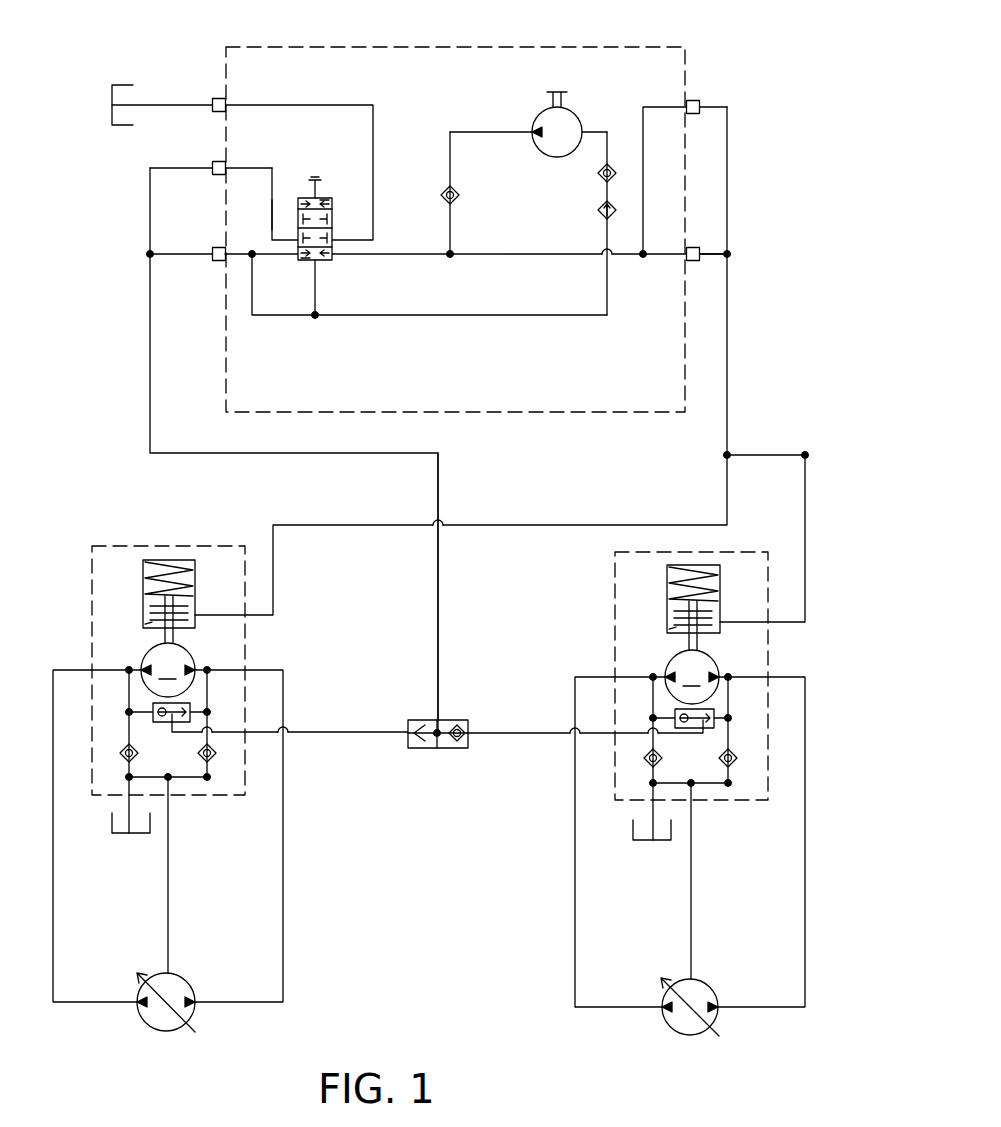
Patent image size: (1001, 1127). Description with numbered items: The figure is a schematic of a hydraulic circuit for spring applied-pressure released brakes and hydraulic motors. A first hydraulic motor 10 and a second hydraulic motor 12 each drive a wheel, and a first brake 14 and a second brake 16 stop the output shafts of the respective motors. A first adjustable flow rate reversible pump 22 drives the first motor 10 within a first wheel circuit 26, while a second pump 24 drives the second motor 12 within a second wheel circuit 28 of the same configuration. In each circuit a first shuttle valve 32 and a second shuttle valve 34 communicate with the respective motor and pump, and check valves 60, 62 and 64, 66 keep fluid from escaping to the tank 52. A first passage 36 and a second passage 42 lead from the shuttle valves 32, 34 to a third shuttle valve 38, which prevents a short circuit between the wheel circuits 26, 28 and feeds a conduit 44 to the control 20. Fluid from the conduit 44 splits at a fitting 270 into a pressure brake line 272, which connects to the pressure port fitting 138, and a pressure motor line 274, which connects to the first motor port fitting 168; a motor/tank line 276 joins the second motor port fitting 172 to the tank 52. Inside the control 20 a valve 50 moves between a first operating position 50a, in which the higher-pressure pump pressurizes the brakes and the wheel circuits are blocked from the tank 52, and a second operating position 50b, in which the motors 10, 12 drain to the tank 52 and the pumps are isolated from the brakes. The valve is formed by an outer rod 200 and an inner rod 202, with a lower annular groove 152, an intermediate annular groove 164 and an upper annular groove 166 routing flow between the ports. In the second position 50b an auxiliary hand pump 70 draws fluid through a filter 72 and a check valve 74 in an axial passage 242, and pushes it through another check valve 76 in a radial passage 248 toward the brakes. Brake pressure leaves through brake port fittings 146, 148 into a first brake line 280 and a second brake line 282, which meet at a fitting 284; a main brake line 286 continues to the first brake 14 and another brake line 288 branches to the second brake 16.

The first hydraulic motor 10 is at (168, 670).
The second hydraulic motor 12 is at (691, 677).
The first spring applied-pressure released brake 14 is at (190, 604).
The second spring applied-pressure released brake 16 is at (714, 612).
The control 20 is at (461, 35).
The first adjustable flow rate reversible pump 22 is at (165, 1027).
The second adjustable flow rate reversible pump 24 is at (685, 1032).
The first wheel circuit 26 is at (306, 873).
The second wheel circuit 28 is at (552, 935).
The first shuttle valve 32 is at (167, 727).
The second shuttle valve 34 is at (703, 736).
The first passage 36 is at (335, 738).
The third shuttle valve 38 is at (437, 749).
The second passage 42 is at (535, 739).
The conduit 44 is at (442, 624).
The valve 50 is at (321, 223).
The first operating position 50a is at (298, 260).
The second operating position 50b is at (327, 204).
The tank 52 is at (111, 122).
The check valve 60 is at (210, 759).
The check valve 62 is at (126, 759).
The check valve 64 is at (732, 764).
The check valve 66 is at (649, 764).
The auxiliary pressure source 70 is at (535, 119).
The filter 72 is at (598, 213).
The check valve 74 is at (598, 174).
The check valve 76 is at (460, 195).
The pressure port fitting 138 is at (217, 263).
The first brake port fitting 146 is at (700, 248).
The second brake port fitting 148 is at (699, 104).
The lower annular groove 152 is at (378, 258).
The intermediate annular groove 164 is at (272, 200).
The upper annular groove 166 is at (376, 139).
The first motor port fitting 168 is at (218, 176).
The second motor port fitting 172 is at (220, 113).
The outer rod 200 is at (316, 178).
The inner rod 202 is at (546, 92).
The axial passage 242 is at (609, 130).
The radial passage 248 is at (448, 216).
The fitting 270 is at (150, 254).
The pressure brake line 272 is at (190, 263).
The pressure motor line 274 is at (150, 212).
The motor/tank line 276 is at (165, 102).
The first brake line 280 is at (711, 264).
The second brake line 282 is at (731, 138).
The fitting 284 is at (735, 256).
The main brake line 286 is at (731, 393).
The brake line 288 is at (808, 553).